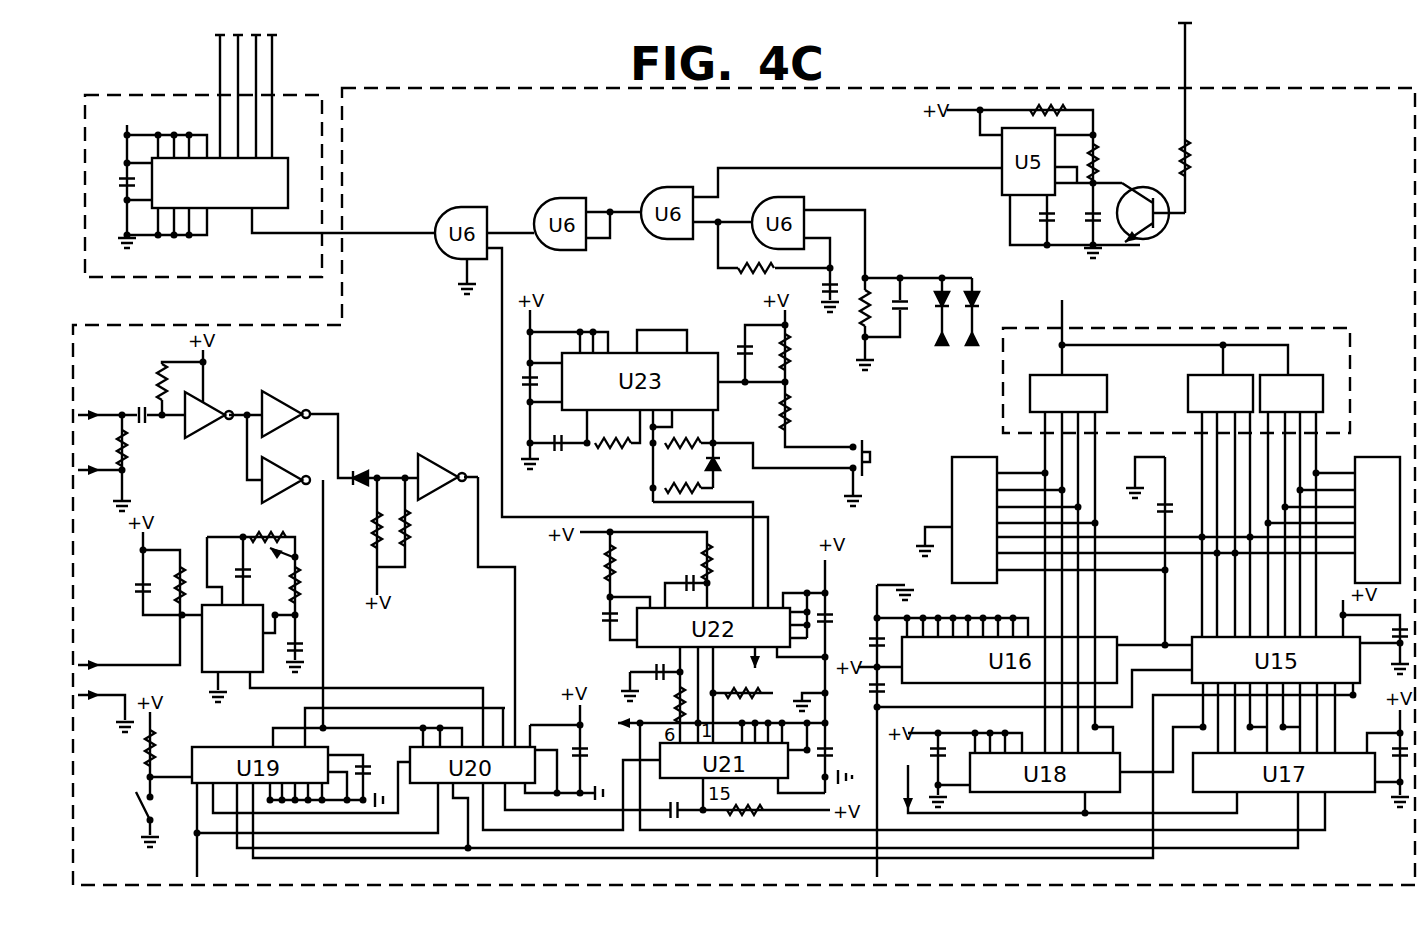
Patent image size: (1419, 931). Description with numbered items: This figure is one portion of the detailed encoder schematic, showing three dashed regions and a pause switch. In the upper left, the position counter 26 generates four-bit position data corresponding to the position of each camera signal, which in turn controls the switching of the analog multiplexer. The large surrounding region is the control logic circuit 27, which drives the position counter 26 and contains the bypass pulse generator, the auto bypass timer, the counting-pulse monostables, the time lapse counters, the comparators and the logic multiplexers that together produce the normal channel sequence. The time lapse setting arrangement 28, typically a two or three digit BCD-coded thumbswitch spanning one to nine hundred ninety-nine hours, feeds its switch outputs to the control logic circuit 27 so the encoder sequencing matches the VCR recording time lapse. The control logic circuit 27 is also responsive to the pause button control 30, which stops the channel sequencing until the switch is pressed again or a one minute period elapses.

The position counter 26 is at (300, 91).
The control logic circuit 27 is at (1122, 90).
The time lapse setting arrangement 28 is at (1302, 331).
The pause button control 30 is at (872, 438).